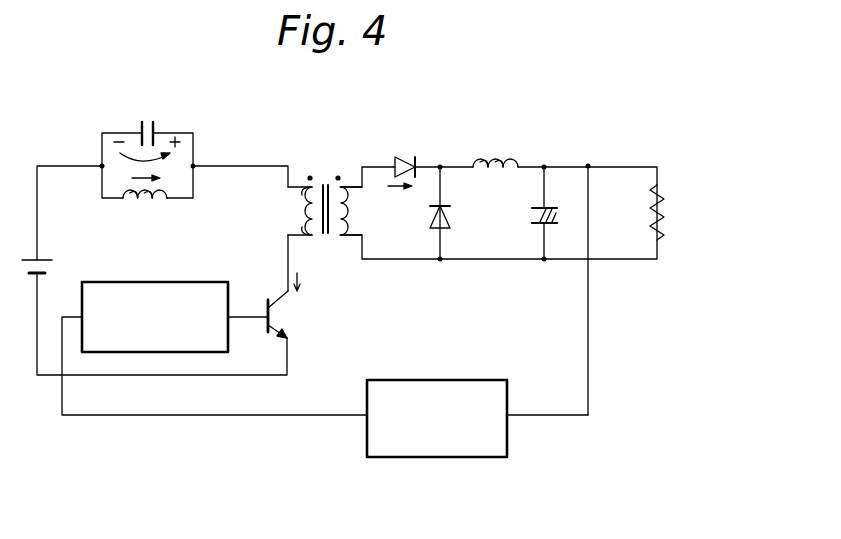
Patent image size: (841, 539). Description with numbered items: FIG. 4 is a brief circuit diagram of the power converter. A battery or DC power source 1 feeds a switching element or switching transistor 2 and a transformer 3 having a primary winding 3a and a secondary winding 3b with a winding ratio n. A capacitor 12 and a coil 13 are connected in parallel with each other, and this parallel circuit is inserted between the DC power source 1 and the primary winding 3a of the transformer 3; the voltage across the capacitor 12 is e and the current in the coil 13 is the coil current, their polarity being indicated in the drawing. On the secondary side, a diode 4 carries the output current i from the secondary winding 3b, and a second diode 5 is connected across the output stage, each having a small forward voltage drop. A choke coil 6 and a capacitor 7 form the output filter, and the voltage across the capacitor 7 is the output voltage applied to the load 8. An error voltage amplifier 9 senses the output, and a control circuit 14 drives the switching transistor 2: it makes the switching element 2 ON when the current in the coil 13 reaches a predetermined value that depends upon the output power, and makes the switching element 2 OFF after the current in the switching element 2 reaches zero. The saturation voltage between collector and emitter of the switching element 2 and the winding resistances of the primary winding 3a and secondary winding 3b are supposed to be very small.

The DC power source 1 is at (49, 257).
The switching transistor 2 is at (278, 322).
The transformer 3 is at (322, 187).
The primary winding 3a is at (300, 207).
The secondary winding 3b is at (350, 210).
The diode 4 is at (401, 158).
The diode 5 is at (430, 221).
The choke coil 6 is at (489, 157).
The capacitor 7 is at (534, 218).
The load 8 is at (646, 206).
The error voltage amplifier 9 is at (470, 380).
The capacitor 12 is at (156, 129).
The coil 13 is at (152, 202).
The control circuit 14 is at (198, 282).